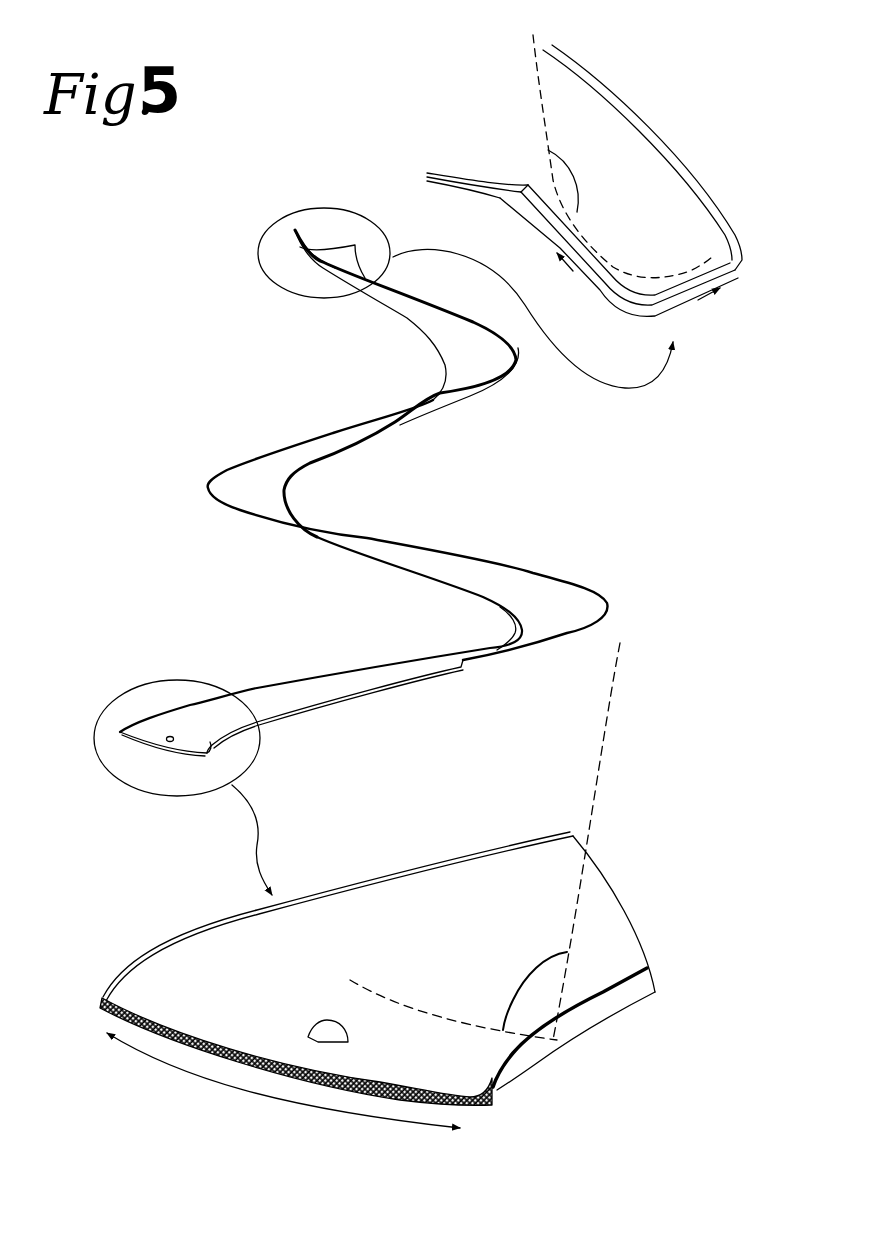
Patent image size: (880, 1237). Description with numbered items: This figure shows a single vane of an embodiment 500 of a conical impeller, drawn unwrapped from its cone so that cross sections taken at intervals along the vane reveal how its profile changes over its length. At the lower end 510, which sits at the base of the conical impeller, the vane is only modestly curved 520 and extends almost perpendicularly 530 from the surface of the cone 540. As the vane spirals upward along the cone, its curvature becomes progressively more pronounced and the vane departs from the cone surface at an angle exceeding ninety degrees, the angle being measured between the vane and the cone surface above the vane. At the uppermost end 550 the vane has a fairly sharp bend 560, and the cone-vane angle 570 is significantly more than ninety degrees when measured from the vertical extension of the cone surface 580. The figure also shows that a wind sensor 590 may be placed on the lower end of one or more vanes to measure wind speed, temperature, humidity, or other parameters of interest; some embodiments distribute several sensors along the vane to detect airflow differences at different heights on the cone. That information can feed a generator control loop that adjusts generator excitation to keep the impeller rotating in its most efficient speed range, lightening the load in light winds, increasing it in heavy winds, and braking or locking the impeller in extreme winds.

The vane of an embodiment 500 is at (203, 488).
The lower end 510 is at (105, 768).
The modestly curved vane portion 520 is at (270, 1098).
The almost perpendicular extension 530 is at (520, 982).
The surface of the cone 540 is at (610, 745).
The uppermost end 550 is at (263, 240).
The sharp bend 560 is at (688, 300).
The cone-vane angle 570 is at (582, 179).
The vertical extension of the cone surface 580 is at (530, 60).
The wind sensor 590 is at (310, 1023).